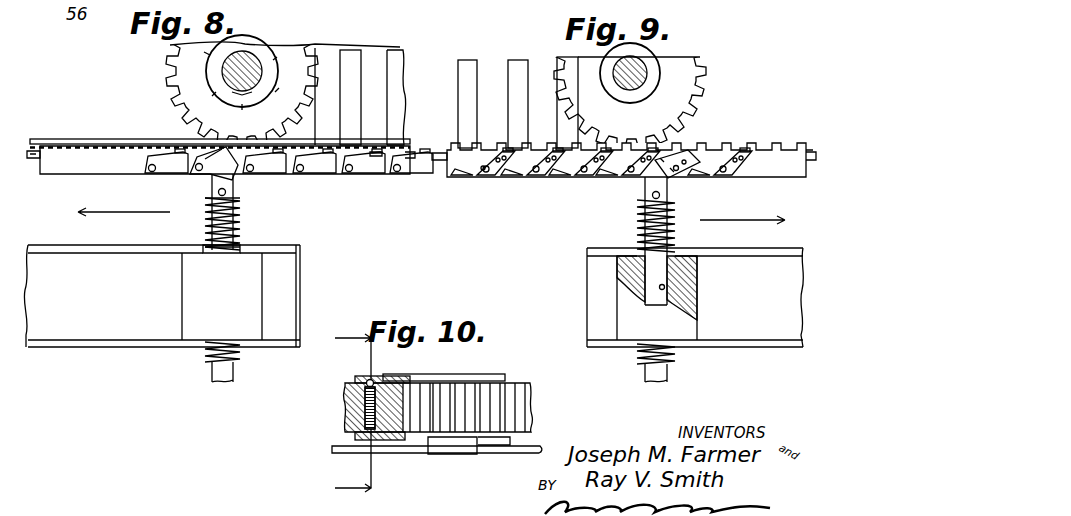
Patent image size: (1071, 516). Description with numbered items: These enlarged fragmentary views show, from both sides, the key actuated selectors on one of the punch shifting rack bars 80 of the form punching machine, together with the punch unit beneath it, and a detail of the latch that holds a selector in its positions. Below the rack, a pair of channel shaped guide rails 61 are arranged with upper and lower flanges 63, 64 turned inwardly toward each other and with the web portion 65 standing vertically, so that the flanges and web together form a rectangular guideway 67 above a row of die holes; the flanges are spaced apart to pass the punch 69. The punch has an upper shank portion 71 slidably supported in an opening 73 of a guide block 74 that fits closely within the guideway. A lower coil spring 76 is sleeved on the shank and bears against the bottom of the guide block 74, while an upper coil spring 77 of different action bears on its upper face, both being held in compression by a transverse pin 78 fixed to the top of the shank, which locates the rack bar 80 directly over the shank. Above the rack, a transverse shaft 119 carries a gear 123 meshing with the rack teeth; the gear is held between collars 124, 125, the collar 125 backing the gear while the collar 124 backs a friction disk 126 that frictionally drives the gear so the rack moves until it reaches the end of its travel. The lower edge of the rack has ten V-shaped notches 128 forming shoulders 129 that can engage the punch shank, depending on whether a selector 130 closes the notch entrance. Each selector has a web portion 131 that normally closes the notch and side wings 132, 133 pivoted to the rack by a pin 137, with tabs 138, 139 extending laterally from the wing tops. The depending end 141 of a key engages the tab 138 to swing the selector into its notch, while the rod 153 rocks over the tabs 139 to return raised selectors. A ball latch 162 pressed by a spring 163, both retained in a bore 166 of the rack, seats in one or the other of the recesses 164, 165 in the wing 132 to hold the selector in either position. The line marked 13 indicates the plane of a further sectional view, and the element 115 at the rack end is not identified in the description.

In FIG. 10, the section line 13 is at (352, 413).
In FIG. 8, the guide rail 61 is at (136, 342).
In FIG. 9, the guide rail 61 is at (592, 260).
In FIG. 8, the upper flange 63 is at (298, 253).
In FIG. 9, the upper flange 63 is at (613, 254).
In FIG. 9, the lower flange 64 is at (602, 344).
In FIG. 8, the web portion 65 is at (298, 287).
In FIG. 9, the web portion 65 is at (592, 291).
In FIG. 8, the rectangular guideway 67 is at (88, 334).
In FIG. 9, the rectangular guideway 67 is at (742, 343).
In FIG. 8, the punch 69 is at (239, 380).
In FIG. 9, the punch 69 is at (676, 381).
In FIG. 8, the shank portion 71 is at (240, 240).
In FIG. 9, the shank portion 71 is at (660, 266).
In FIG. 9, the opening 73 is at (663, 289).
In FIG. 8, the guide block 74 is at (192, 294).
In FIG. 9, the guide block 74 is at (685, 324).
In FIG. 8, the coil spring 76 is at (207, 360).
In FIG. 9, the coil spring 76 is at (677, 359).
In FIG. 8, the coil spring 77 is at (238, 221).
In FIG. 9, the coil spring 77 is at (678, 223).
In FIG. 8, the transverse pin 78 is at (206, 200).
In FIG. 9, the transverse pin 78 is at (650, 196).
In FIG. 8, the punch transfer rack bar 80 is at (105, 172).
In FIG. 9, the punch transfer rack bar 80 is at (782, 146).
In FIG. 10, the punch transfer rack bar 80 is at (534, 388).
In FIG. 8, the end stop 115 is at (60, 137).
In FIG. 9, the end stop 115 is at (442, 160).
In FIG. 8, the transverse shaft 119 is at (238, 71).
In FIG. 9, the transverse shaft 119 is at (640, 72).
In FIG. 8, the gear 123 is at (300, 62).
In FIG. 9, the gear 123 is at (690, 81).
In FIG. 8, the collar 124 is at (218, 61).
In FIG. 9, the collar 125 is at (645, 93).
In FIG. 8, the friction disk 126 is at (213, 95).
In FIG. 8, the V-shaped notch 128 is at (362, 174).
In FIG. 9, the V-shaped notch 128 is at (470, 177).
In FIG. 8, the shoulder 129 is at (186, 179).
In FIG. 9, the shoulder 129 is at (458, 178).
In FIG. 8, the selector 130 is at (315, 178).
In FIG. 9, the selector 130 is at (565, 177).
In FIG. 10, the selector 130 is at (510, 374).
In FIG. 9, the web portion 131 is at (512, 177).
In FIG. 9, the side wing 132 is at (520, 160).
In FIG. 10, the side wing 132 is at (475, 373).
In FIG. 8, the side wing 133 is at (362, 180).
In FIG. 10, the side wing 133 is at (497, 455).
In FIG. 8, the pin 137 is at (157, 175).
In FIG. 9, the pin 137 is at (483, 165).
In FIG. 10, the pin 137 is at (376, 381).
In FIG. 9, the tab 138 is at (500, 152).
In FIG. 8, the tab 139 is at (374, 153).
In FIG. 10, the tab 139 is at (440, 457).
In FIG. 8, the depending end 141 is at (365, 62).
In FIG. 9, the depending end 141 is at (520, 62).
In FIG. 8, the rod 153 is at (133, 141).
In FIG. 10, the rod 153 is at (350, 454).
In FIG. 10, the ball latch 162 is at (345, 391).
In FIG. 10, the spring 163 is at (366, 411).
In FIG. 10, the recess 164 is at (370, 380).
In FIG. 10, the recess 165 is at (400, 378).
In FIG. 10, the bore 166 is at (356, 436).